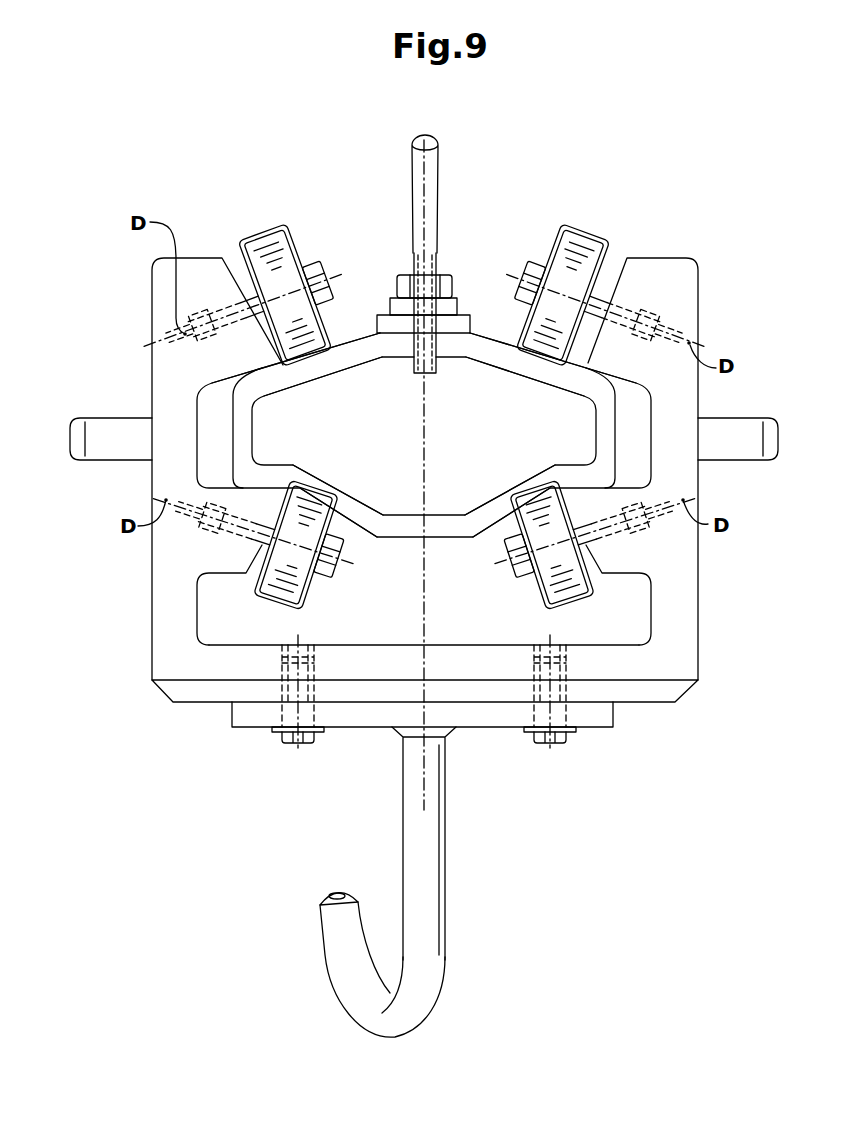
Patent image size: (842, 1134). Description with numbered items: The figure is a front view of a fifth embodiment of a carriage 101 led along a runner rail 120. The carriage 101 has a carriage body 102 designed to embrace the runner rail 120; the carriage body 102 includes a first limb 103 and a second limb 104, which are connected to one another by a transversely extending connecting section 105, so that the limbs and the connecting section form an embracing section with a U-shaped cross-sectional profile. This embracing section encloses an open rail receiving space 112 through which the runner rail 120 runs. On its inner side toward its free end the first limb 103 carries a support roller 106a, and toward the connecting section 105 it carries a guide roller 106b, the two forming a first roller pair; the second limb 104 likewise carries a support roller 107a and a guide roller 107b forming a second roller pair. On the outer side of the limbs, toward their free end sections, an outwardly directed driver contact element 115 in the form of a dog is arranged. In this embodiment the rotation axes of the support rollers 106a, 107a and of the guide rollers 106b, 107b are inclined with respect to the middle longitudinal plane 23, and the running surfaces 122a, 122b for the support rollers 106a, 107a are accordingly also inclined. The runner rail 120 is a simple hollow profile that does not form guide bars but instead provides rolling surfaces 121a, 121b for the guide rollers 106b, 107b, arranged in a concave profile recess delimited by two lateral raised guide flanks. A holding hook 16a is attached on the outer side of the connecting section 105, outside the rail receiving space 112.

The carriage 101 is at (675, 256).
The carriage body 102 is at (190, 662).
The first limb 103 is at (182, 402).
The second limb 104 is at (672, 397).
The connecting section 105 is at (363, 670).
The support roller 106a is at (275, 243).
The guide roller 106b is at (280, 570).
The support roller 107a is at (585, 237).
The guide roller 107b is at (567, 580).
The rail receiving space 112 is at (436, 600).
The driver contact element 115 is at (118, 448).
The runner rail 120 is at (415, 543).
The rolling surface 121a is at (340, 511).
The rolling surface 121b is at (507, 508).
The running surface 122a is at (272, 366).
The running surface 122b is at (508, 347).
The middle longitudinal plane 23 is at (424, 710).
The holding hook 16a is at (428, 833).